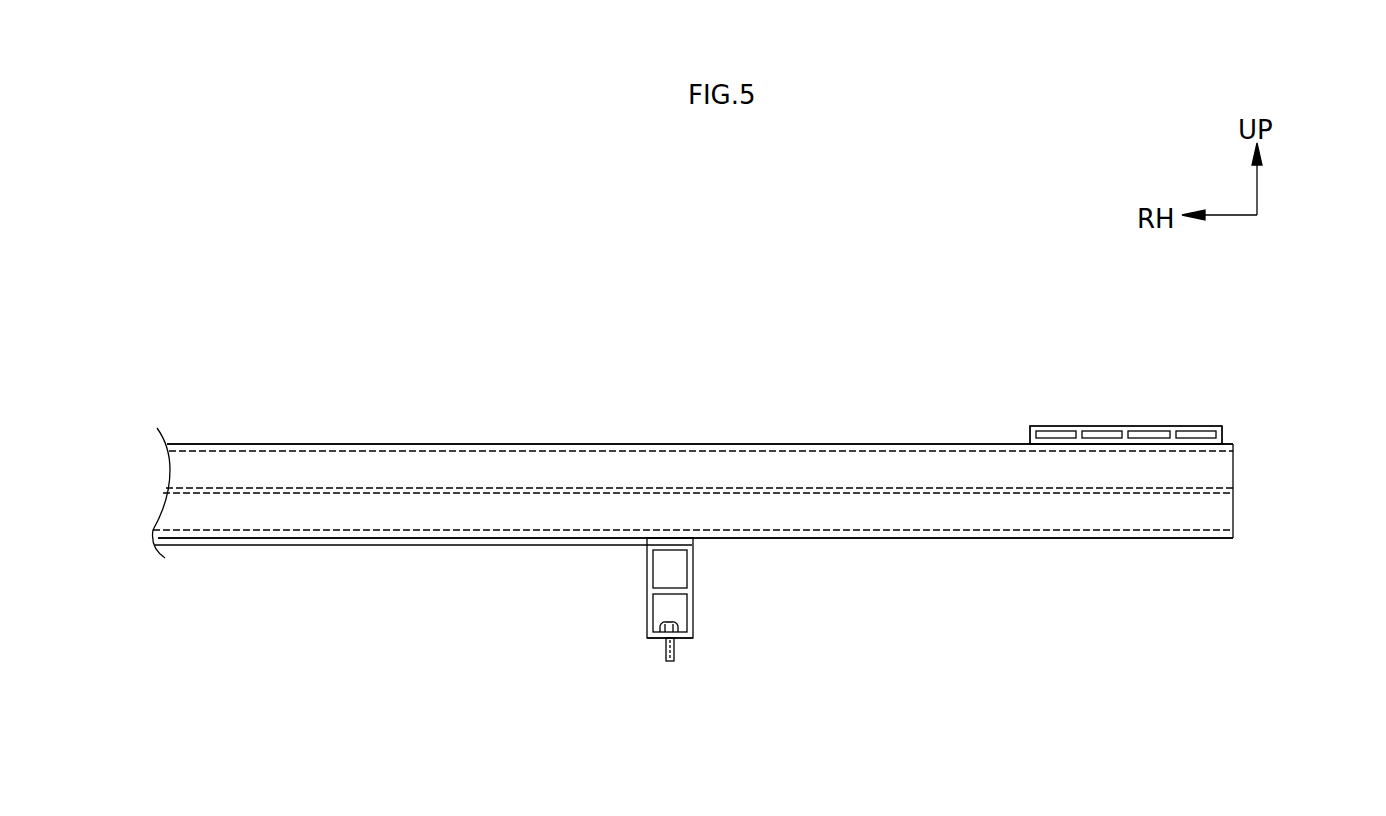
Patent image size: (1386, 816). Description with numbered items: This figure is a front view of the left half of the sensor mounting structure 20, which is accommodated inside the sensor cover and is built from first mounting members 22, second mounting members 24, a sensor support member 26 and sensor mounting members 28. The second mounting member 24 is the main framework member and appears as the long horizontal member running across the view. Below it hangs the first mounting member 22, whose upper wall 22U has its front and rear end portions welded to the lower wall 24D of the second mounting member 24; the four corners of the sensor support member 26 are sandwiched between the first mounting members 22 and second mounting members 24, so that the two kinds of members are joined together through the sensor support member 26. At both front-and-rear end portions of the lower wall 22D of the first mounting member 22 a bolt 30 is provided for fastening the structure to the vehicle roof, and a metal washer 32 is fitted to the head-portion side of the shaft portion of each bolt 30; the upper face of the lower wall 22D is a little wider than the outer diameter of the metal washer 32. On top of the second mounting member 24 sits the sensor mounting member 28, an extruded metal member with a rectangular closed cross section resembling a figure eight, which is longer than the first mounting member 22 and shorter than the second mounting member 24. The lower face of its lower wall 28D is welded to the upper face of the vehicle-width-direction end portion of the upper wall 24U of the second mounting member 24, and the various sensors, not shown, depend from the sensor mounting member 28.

The sensor mounting structure 20 is at (892, 388).
The first mounting member 22 is at (641, 606).
The upper wall of first mounting member 22U is at (672, 544).
The lower wall of first mounting member 22D is at (656, 640).
The second mounting member 24 is at (1242, 487).
The upper wall of second mounting member 24U is at (342, 440).
The lower wall of second mounting member 24D is at (886, 541).
The sensor support member 26 is at (297, 547).
The sensor mounting member 28 is at (1166, 420).
The lower wall of sensor mounting member 28D is at (1145, 446).
The bolt 30 is at (679, 652).
The metal washer 32 is at (683, 626).